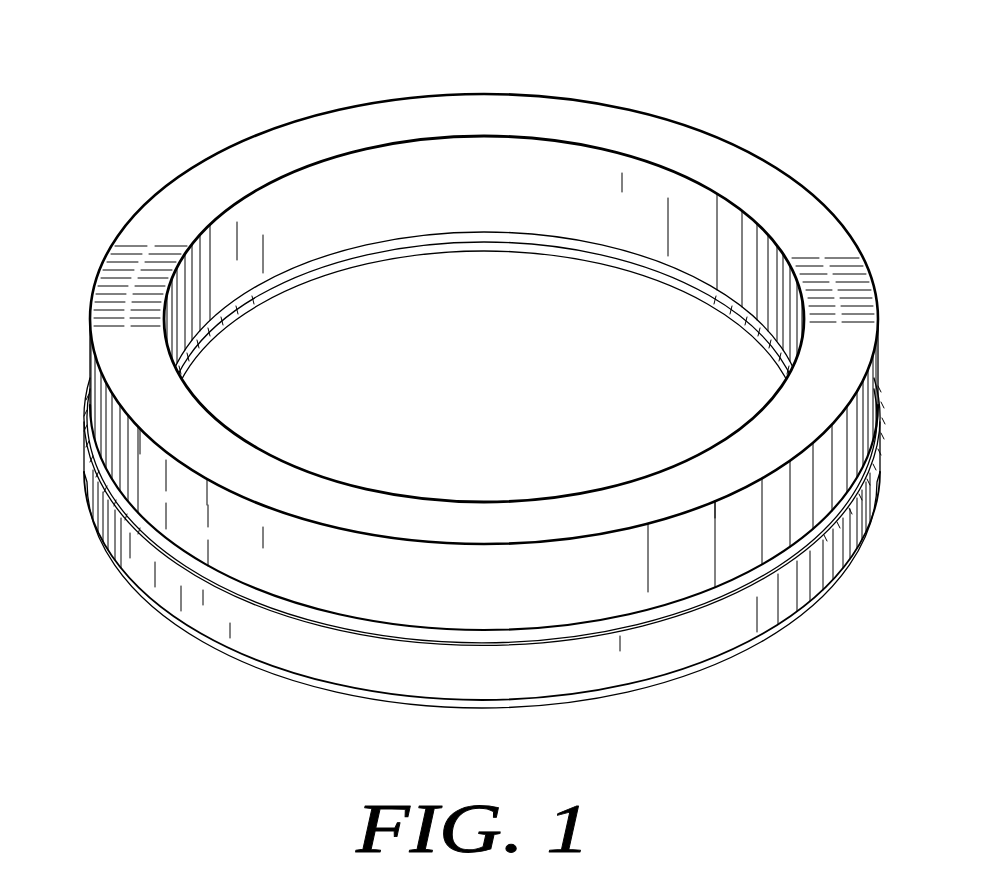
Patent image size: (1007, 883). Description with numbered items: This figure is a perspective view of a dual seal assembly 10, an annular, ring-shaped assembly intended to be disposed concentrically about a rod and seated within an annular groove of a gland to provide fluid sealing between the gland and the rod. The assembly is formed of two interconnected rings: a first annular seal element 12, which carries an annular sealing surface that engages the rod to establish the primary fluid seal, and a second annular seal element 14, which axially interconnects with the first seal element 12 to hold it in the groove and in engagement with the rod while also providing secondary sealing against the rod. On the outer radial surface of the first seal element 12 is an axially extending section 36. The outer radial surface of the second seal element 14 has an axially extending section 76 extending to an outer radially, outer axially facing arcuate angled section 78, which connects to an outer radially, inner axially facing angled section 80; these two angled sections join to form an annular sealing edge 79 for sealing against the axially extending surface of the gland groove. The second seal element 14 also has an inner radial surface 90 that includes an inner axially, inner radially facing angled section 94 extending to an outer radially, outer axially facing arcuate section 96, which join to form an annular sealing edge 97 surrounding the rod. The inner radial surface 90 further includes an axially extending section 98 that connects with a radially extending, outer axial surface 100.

The dual seal assembly 10 is at (150, 128).
The first annular seal element 12 is at (196, 600).
The second annular seal element 14 is at (338, 92).
The axially extending section 36 is at (615, 660).
The axially extending section 76 is at (178, 530).
The outer radially, outer axially facing arcuate angled section 78 is at (282, 606).
The annular sealing edge 79 is at (333, 628).
The outer radially, inner axially facing angled section 80 is at (416, 643).
The inner radial surface 90 is at (640, 272).
The inner axially, inner radially facing angled section 94 is at (275, 290).
The outer radially, outer axially facing arcuate section 96 is at (318, 260).
The annular sealing edge 97 is at (378, 252).
The axially extending section 98 is at (455, 203).
The radially extending, outer axial surface 100 is at (752, 172).